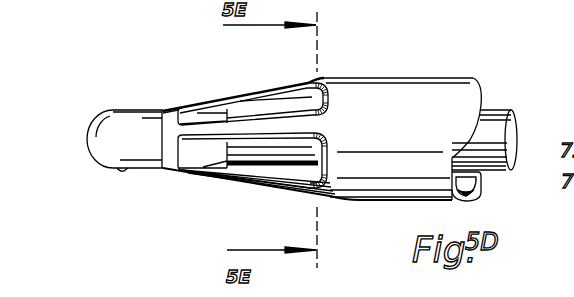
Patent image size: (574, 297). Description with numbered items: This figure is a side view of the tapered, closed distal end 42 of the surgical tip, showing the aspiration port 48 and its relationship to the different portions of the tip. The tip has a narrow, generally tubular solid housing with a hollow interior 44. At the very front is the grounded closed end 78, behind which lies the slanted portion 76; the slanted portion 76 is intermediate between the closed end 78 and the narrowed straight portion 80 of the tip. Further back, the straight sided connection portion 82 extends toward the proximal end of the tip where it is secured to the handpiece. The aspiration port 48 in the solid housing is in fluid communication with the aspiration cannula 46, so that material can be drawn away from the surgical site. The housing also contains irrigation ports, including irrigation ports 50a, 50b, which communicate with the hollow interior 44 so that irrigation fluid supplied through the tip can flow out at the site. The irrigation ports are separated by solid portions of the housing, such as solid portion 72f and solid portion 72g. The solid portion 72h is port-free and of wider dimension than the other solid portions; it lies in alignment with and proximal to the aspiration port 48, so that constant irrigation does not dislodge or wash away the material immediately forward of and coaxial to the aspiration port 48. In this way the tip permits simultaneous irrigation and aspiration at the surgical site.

The distal end 42 is at (450, 78).
The hollow interior 44 is at (467, 180).
The aspiration cannula 46 is at (498, 110).
The aspiration port 48 is at (140, 170).
The irrigation port 50a is at (300, 186).
The irrigation port 50b is at (271, 87).
The solid portion 72f is at (216, 95).
The solid portion 72g is at (303, 122).
The solid portion 72h is at (218, 180).
The slanted portion 76 is at (307, 81).
The closed end 78 is at (88, 132).
The narrowed straight portion 80 is at (148, 112).
The straight sided connection portion 82 is at (465, 93).